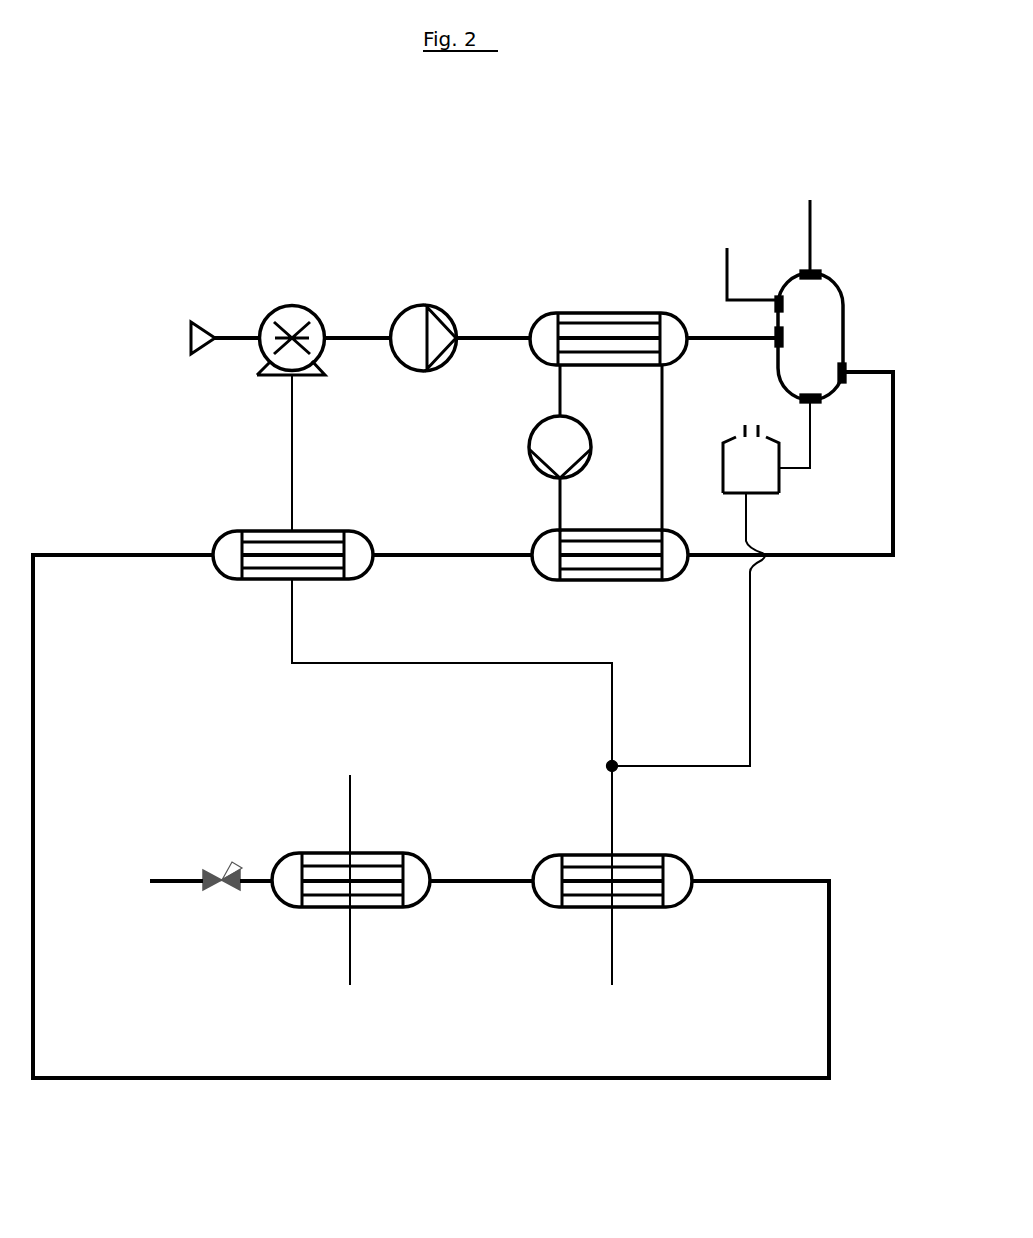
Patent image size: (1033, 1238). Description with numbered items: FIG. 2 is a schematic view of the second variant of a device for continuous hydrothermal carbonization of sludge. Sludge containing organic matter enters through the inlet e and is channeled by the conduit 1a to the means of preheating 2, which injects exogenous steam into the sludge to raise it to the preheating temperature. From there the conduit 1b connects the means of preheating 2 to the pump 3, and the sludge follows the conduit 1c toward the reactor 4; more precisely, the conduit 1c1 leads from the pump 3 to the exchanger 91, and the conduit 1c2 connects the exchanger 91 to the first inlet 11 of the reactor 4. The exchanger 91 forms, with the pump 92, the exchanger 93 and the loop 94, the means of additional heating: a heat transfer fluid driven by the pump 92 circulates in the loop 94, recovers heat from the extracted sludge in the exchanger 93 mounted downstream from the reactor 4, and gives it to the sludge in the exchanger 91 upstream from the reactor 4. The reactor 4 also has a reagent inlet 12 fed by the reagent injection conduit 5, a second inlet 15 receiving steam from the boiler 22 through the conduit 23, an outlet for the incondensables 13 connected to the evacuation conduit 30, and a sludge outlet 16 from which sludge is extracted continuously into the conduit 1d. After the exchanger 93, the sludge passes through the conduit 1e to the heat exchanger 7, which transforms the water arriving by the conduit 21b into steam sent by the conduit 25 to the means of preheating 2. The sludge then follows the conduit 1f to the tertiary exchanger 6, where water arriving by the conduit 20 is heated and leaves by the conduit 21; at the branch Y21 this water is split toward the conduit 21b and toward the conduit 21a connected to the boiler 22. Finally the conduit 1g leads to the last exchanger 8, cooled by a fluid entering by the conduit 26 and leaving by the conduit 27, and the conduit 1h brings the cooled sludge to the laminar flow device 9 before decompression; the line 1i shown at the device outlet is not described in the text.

The conduit 1a is at (232, 338).
The conduit 1b is at (356, 340).
The conduit 1c is at (128, 226).
The conduit 1c1 is at (512, 338).
The conduit 1c2 is at (718, 338).
The conduit 1d is at (893, 422).
The conduit 1e is at (456, 555).
The conduit 1f is at (34, 660).
The conduit 1g is at (481, 880).
The conduit 1h is at (256, 886).
The refrigerant line segment 1i is at (158, 885).
The inlet e is at (203, 360).
The means of preheating 2 is at (295, 305).
The pump 3 is at (422, 308).
The reactor 4 is at (845, 315).
The reagent injection conduit 5 is at (728, 262).
The tertiary exchanger 6 is at (662, 908).
The heat exchanger 7 is at (224, 531).
The last exchanger 8 is at (274, 858).
The laminar flow device 9 is at (208, 875).
The first inlet 11 is at (774, 342).
The reagent inlet 12 is at (776, 300).
The outlet for the incondensables 13 is at (815, 270).
The second inlet 15 is at (806, 404).
The sludge outlet 16 is at (843, 370).
The conduit 20 is at (614, 970).
The conduit 21 is at (614, 796).
The conduit 21a is at (751, 652).
The conduit 21b is at (290, 660).
The boiler 22 is at (738, 434).
The conduit 23 is at (812, 432).
The conduit 25 is at (294, 436).
The conduit 26 is at (352, 972).
The conduit 27 is at (352, 780).
The evacuation conduit 30 is at (812, 222).
The exchanger 91 is at (590, 313).
The pump 92 is at (531, 442).
The exchanger 93 is at (545, 582).
The loop 94 is at (660, 462).
The branch Y21 is at (610, 764).